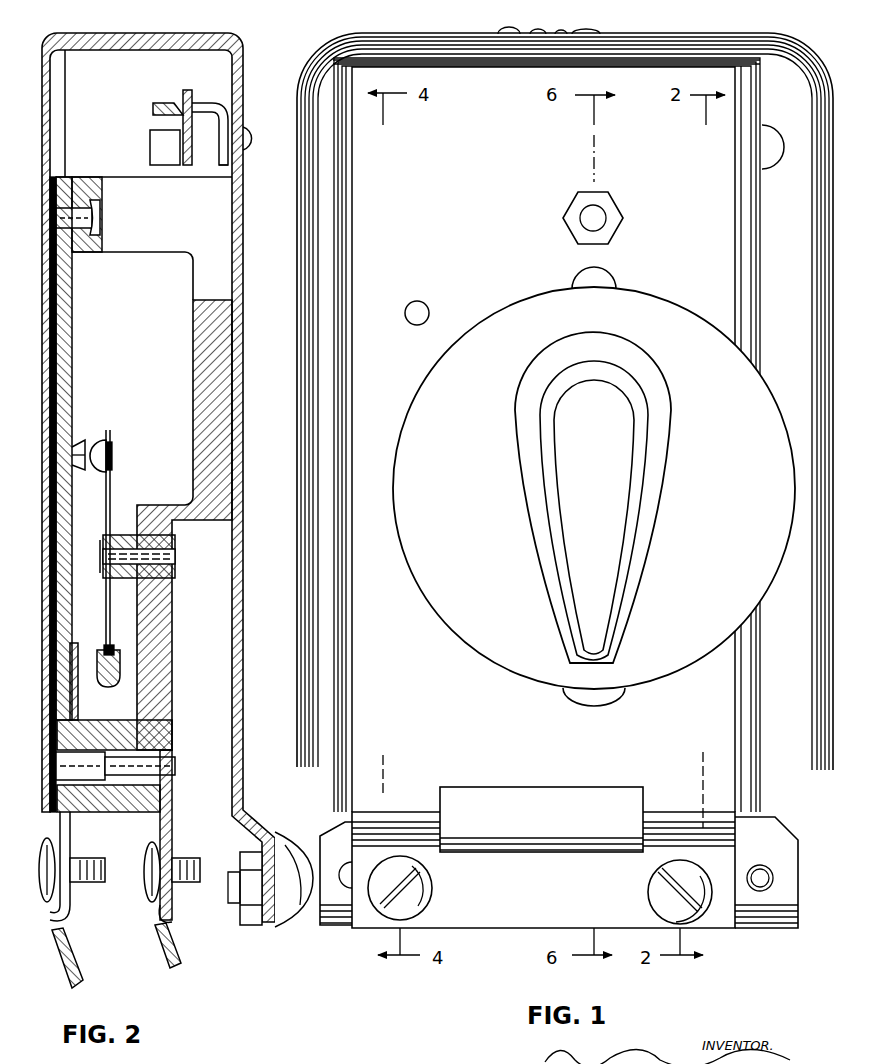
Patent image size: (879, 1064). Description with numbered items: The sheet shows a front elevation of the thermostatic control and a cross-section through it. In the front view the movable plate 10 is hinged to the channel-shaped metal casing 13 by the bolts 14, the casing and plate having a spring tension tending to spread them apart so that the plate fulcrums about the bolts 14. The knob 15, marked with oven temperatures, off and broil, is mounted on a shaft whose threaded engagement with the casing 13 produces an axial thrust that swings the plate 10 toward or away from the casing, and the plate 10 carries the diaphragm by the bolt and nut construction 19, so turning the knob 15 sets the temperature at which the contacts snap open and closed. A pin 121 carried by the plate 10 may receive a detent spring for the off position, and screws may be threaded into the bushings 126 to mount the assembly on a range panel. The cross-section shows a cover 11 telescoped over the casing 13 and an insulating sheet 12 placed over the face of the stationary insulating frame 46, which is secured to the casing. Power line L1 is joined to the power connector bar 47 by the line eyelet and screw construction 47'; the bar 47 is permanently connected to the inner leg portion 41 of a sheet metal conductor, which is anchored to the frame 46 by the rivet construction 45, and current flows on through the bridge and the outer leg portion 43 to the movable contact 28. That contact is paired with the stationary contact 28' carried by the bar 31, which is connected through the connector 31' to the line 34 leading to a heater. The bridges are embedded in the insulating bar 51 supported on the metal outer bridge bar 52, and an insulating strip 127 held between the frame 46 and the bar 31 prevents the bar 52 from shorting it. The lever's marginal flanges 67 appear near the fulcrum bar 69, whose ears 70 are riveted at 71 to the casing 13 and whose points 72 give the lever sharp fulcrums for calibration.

In FIG. 1, the movable plate 10 is at (428, 179).
In FIG. 2, the cover 11 is at (50, 81).
In FIG. 2, the insulating sheet 12 is at (56, 182).
In FIG. 2, the metal casing 13 is at (237, 77).
In FIG. 2, the bolts 14 is at (300, 915).
In FIG. 1, the bolts 14 is at (432, 895).
In FIG. 1, the knob 15 is at (668, 675).
In FIG. 1, the bolt and nut construction 19 is at (598, 218).
In FIG. 2, the movable contact 28 is at (113, 440).
In FIG. 2, the stationary switch contact 28' is at (88, 426).
In FIG. 2, the bar 31 is at (78, 555).
In FIG. 2, the line eyelet and screw-threaded connector 31' is at (72, 873).
In FIG. 2, the line 34 is at (70, 936).
In FIG. 2, the inner leg portion 41 is at (106, 592).
In FIG. 2, the outer leg portion 43 is at (110, 500).
In FIG. 2, the rivet construction 45 is at (175, 560).
In FIG. 2, the stationary insulating frame 46 is at (112, 812).
In FIG. 2, the power connector bar 47 is at (181, 836).
In FIG. 2, the line eyelet and screw construction 47' is at (156, 868).
In FIG. 2, the insulating bar 51 is at (118, 646).
In FIG. 2, the metal outer bridge bar 52 is at (112, 687).
In FIG. 2, the marginal flanges 67 is at (150, 150).
In FIG. 2, the fulcrum bar 69 is at (162, 103).
In FIG. 2, the ears 70 is at (226, 157).
In FIG. 2, the rivets 71 is at (240, 150).
In FIG. 1, the rivets 71 is at (766, 135).
In FIG. 2, the fulcrum points 72 is at (183, 118).
In FIG. 1, the pin 121 is at (419, 292).
In FIG. 1, the bushings 126 is at (616, 270).
In FIG. 2, the insulating strip 127 is at (78, 655).
In FIG. 2, the power line L1 is at (170, 950).